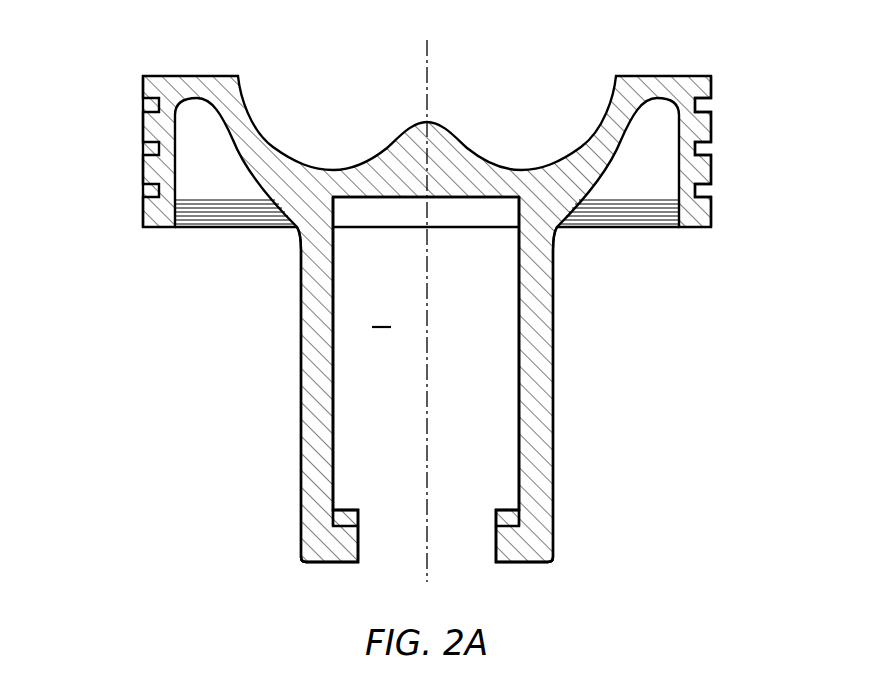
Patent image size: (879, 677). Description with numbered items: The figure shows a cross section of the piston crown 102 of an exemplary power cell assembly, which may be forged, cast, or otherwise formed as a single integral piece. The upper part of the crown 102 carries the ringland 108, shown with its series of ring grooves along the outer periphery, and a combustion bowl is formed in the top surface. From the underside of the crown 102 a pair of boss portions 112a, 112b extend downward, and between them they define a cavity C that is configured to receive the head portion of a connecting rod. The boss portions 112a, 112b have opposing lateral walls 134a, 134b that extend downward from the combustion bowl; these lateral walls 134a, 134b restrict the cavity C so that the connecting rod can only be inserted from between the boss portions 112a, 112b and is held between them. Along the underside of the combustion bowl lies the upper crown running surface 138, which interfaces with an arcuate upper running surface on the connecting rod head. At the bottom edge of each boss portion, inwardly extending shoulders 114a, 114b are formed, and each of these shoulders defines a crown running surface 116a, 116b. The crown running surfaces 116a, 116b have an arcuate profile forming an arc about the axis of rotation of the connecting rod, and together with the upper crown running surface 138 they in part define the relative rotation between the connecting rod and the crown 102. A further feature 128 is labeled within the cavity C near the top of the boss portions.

The piston crown 102 is at (111, 70).
The ringland 108 is at (723, 75).
The boss portion 112a is at (308, 358).
The boss portion 112b is at (547, 300).
The shoulder 114a is at (347, 509).
The shoulder 114b is at (507, 509).
The crown running surface 116a is at (359, 520).
The crown running surface 116b is at (495, 520).
The crown underside surface 128 is at (484, 238).
The lateral wall 134a is at (333, 370).
The lateral wall 134b is at (518, 315).
The upper crown running surface 138 is at (380, 231).